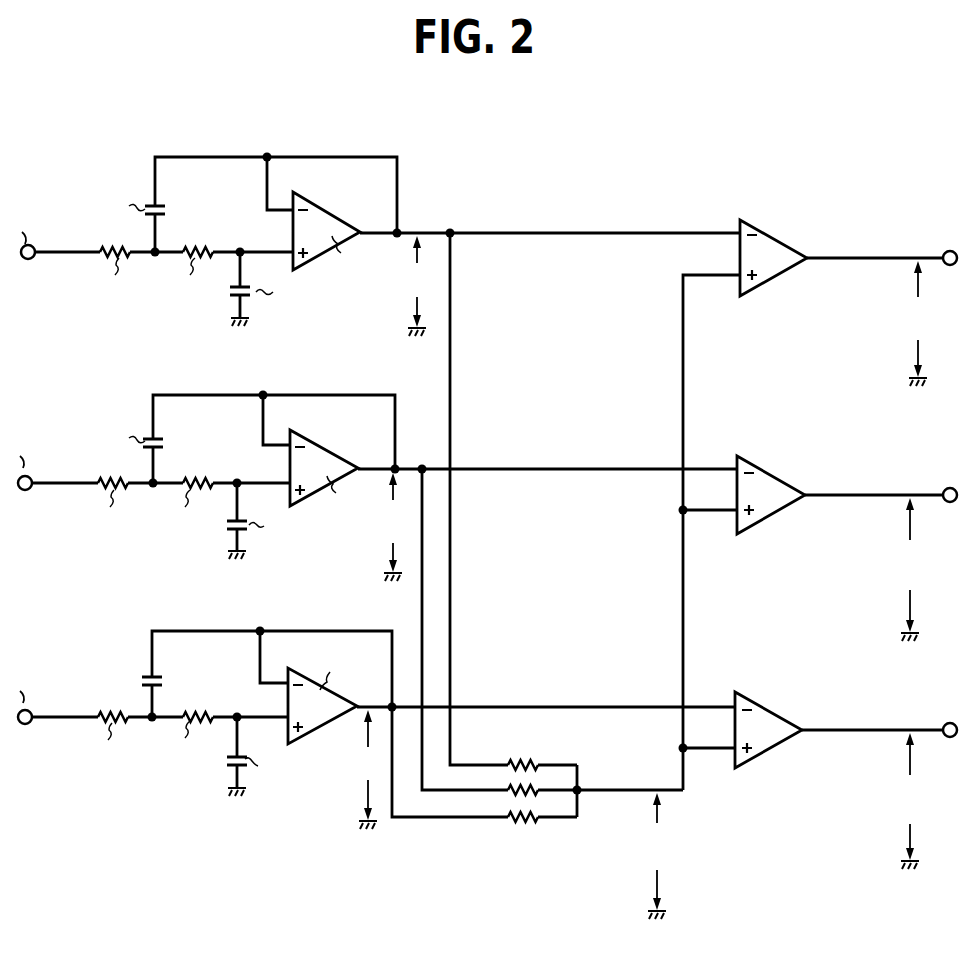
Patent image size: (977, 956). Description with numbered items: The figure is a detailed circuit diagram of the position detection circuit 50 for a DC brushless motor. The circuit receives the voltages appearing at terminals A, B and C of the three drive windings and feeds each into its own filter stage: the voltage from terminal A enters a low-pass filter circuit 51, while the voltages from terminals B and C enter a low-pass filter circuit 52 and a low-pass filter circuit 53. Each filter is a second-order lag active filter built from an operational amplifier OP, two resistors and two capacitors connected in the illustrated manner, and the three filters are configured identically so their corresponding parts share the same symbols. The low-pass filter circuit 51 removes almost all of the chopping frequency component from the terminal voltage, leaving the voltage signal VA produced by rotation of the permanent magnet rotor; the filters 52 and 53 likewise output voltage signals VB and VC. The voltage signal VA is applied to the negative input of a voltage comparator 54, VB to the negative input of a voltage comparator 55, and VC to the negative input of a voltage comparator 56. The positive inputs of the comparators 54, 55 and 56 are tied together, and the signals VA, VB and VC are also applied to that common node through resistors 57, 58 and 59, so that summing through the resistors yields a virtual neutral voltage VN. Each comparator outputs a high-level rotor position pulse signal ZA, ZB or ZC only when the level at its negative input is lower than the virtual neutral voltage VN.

The position detection circuit 50 is at (505, 145).
The low-pass filter circuit 51 is at (293, 147).
The low-pass filter circuit 52 is at (275, 385).
The low-pass filter circuit 53 is at (260, 612).
The voltage comparator 54 is at (783, 238).
The voltage comparator 55 is at (780, 475).
The voltage comparator 56 is at (770, 712).
The resistor 57 is at (527, 762).
The resistor 58 is at (538, 785).
The resistor 59 is at (520, 822).